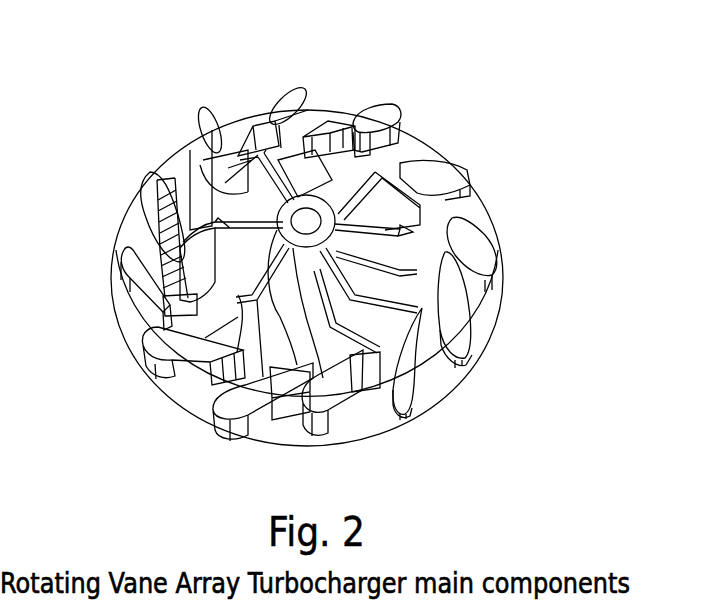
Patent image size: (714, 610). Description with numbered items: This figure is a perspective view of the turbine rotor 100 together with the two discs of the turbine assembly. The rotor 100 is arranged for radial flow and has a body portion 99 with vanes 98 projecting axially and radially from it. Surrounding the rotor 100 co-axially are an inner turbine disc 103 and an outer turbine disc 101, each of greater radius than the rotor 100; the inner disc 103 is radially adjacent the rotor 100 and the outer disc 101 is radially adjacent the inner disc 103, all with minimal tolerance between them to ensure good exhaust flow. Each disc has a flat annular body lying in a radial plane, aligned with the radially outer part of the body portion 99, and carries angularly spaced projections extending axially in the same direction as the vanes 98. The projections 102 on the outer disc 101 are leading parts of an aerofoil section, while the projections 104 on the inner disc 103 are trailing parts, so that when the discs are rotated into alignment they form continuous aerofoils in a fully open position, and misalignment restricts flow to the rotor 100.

The vanes 98 is at (435, 296).
The body portion 99 is at (433, 322).
The turbine rotor 100 is at (410, 242).
The outer turbine disc 101 is at (418, 145).
The projections 102 is at (387, 113).
The inner turbine disc 103 is at (183, 213).
The projections 104 is at (177, 313).